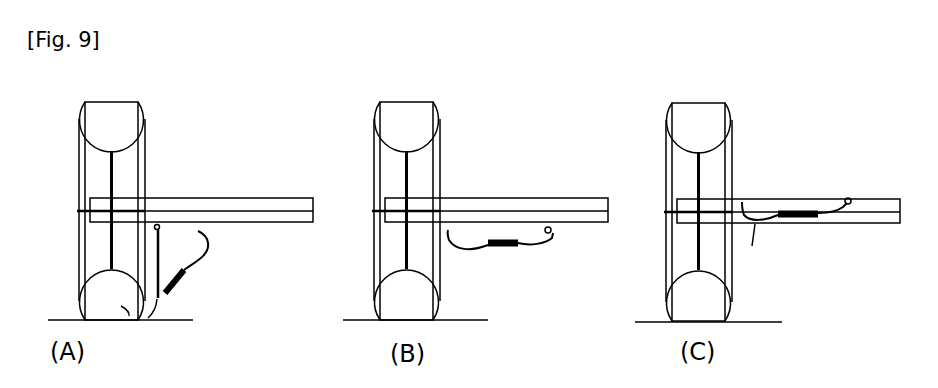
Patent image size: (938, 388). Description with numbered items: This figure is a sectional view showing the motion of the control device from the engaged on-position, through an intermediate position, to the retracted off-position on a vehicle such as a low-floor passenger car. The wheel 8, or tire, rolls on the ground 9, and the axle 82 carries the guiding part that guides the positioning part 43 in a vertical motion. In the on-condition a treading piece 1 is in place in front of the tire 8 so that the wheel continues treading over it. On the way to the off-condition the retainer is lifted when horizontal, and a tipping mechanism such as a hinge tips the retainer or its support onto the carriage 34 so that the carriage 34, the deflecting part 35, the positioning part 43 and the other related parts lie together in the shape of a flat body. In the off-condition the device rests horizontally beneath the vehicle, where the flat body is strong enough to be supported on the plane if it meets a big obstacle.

The treading piece 1 is at (128, 314).
The wheel 8 is at (77, 101).
The ground 9 is at (175, 317).
The carriage 34 is at (155, 300).
The deflecting part 35 is at (165, 292).
The positioning part 43 is at (157, 224).
The axle 82 is at (245, 199).